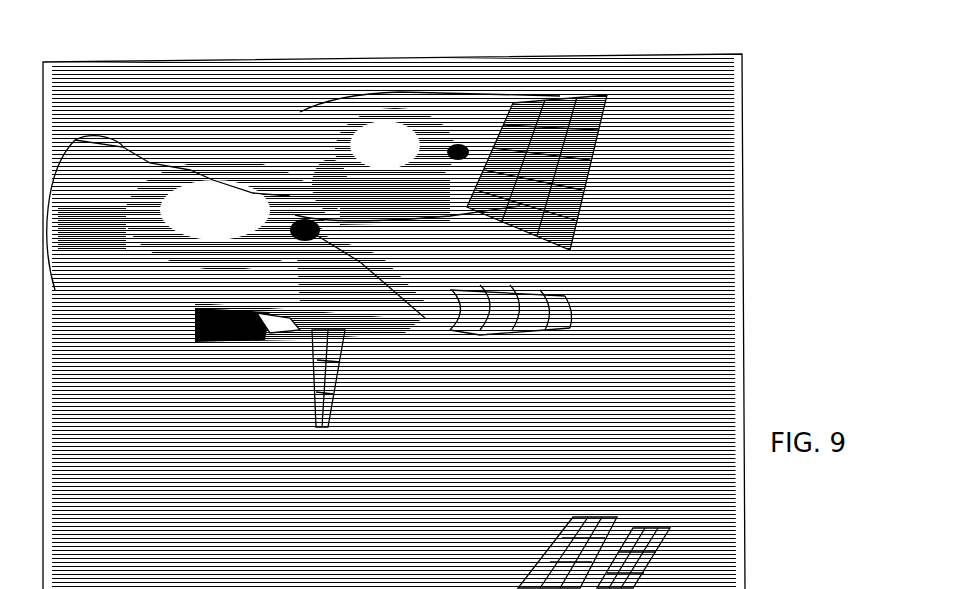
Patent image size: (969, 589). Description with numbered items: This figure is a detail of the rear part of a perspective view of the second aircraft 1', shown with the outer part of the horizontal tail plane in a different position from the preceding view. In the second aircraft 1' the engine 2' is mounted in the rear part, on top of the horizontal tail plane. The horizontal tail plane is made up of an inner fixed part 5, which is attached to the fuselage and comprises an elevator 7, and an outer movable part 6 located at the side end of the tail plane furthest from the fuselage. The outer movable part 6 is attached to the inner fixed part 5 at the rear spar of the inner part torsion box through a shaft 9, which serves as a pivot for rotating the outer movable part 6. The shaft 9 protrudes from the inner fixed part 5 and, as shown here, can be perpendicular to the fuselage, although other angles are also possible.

The second aircraft 1' is at (394, 302).
The engine 2' is at (297, 357).
The inner fixed part 5 is at (595, 169).
The outer movable part 6 is at (449, 400).
The elevator 7 is at (555, 336).
The shaft 9 is at (236, 227).